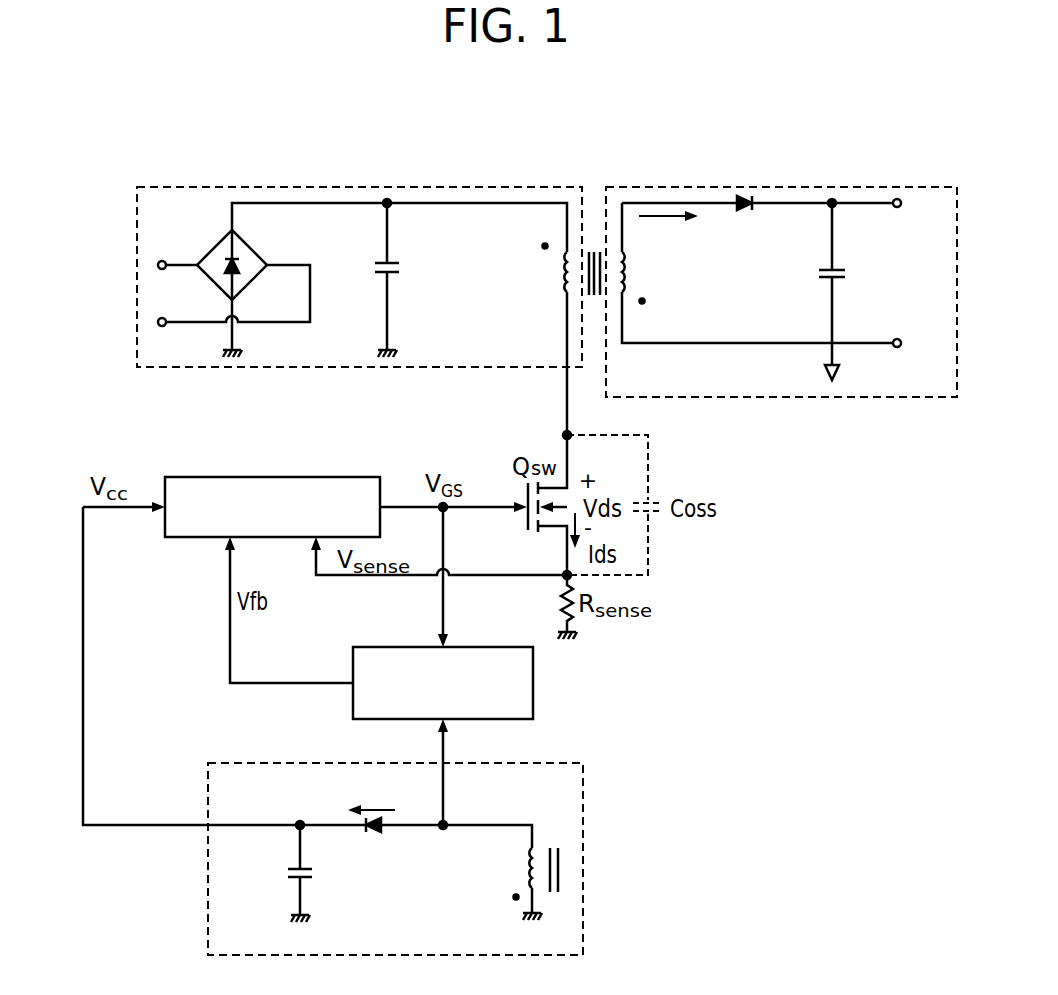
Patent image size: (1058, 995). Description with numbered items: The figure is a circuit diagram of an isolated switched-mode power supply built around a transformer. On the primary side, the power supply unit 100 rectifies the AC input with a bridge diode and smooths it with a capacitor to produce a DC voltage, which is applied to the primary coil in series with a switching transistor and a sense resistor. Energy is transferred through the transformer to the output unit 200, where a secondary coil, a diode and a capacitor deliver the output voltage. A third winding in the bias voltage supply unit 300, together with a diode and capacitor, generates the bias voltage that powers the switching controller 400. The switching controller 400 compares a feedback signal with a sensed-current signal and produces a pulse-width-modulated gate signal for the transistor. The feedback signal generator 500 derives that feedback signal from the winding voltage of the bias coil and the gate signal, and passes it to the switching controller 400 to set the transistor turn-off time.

The power supply unit 100 is at (137, 252).
The output unit 200 is at (915, 397).
The bias voltage supply unit 300 is at (583, 828).
The switching controller 400 is at (346, 477).
The feedback signal generator 500 is at (533, 683).